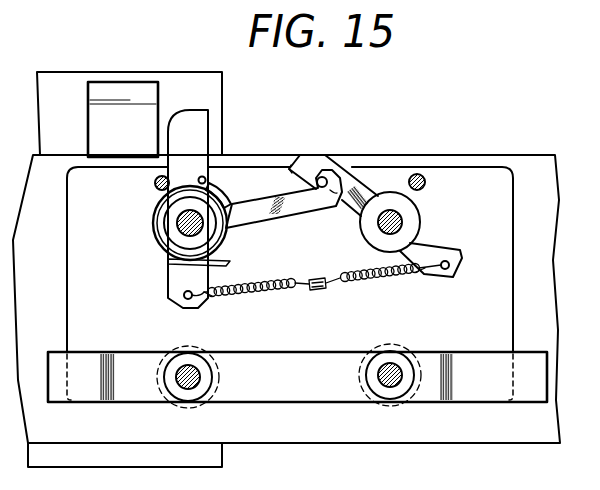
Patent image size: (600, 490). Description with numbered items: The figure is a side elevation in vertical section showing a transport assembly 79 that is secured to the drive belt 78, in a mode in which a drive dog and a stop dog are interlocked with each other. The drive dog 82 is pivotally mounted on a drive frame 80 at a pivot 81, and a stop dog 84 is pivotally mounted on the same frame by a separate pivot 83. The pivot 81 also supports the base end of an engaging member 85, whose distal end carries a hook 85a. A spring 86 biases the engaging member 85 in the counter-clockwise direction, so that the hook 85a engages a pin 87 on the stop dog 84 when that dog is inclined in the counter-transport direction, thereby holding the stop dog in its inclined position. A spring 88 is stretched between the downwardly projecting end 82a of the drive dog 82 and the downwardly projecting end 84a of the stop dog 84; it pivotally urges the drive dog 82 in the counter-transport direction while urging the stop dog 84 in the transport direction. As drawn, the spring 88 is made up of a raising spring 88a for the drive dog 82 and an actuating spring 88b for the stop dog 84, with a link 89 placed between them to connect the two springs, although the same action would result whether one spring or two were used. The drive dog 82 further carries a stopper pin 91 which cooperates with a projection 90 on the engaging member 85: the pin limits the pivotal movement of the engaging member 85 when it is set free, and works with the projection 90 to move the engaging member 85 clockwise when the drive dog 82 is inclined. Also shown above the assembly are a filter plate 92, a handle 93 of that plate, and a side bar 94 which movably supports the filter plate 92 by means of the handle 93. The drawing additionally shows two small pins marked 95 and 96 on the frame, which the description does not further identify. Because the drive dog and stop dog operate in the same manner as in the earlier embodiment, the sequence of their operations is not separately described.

The drive belt 78 is at (287, 396).
The transport assembly 79 is at (468, 162).
The drive frame 80 is at (377, 166).
The pivot 81 is at (160, 256).
The drive dog 82 is at (198, 118).
The downwardly projecting end of the drive dog 82a is at (173, 287).
The pivot 83 is at (402, 220).
The stop dog 84 is at (318, 163).
The downwardly projecting end of the stop dog 84a is at (450, 250).
The engaging member 85 is at (268, 215).
The hook 85a is at (336, 200).
The spring 86 is at (185, 229).
The pin 87 is at (291, 166).
The spring 88 is at (370, 286).
The raising spring 88a is at (257, 294).
The actuating spring 88b is at (413, 278).
The link 89 is at (318, 291).
The projection 90 is at (222, 185).
The stopper pin 91 is at (200, 178).
The filter plate 92 is at (200, 77).
The handle 93 is at (128, 92).
The side bar 94 is at (522, 158).
The pin 95 is at (155, 185).
The pin 96 is at (417, 173).